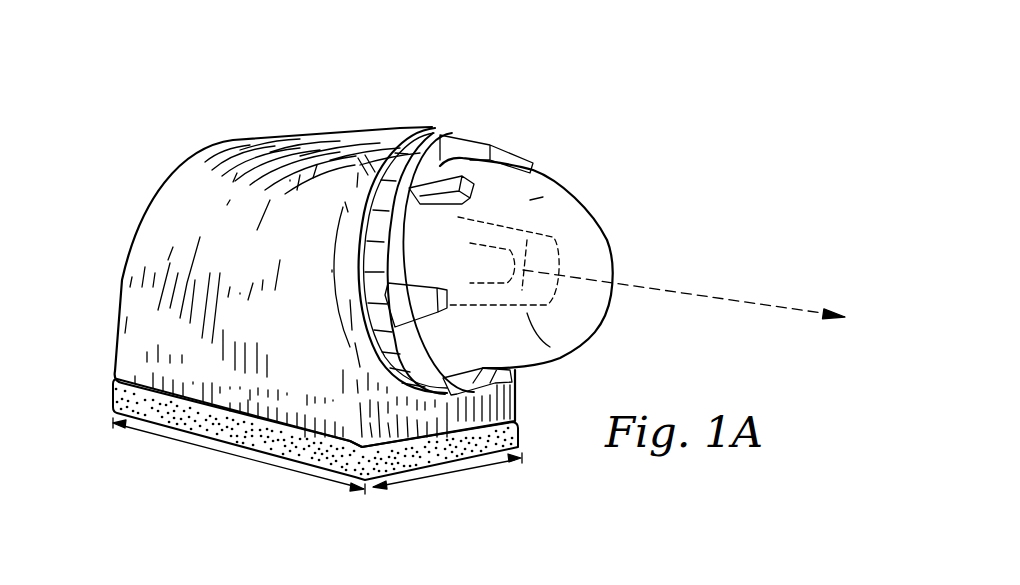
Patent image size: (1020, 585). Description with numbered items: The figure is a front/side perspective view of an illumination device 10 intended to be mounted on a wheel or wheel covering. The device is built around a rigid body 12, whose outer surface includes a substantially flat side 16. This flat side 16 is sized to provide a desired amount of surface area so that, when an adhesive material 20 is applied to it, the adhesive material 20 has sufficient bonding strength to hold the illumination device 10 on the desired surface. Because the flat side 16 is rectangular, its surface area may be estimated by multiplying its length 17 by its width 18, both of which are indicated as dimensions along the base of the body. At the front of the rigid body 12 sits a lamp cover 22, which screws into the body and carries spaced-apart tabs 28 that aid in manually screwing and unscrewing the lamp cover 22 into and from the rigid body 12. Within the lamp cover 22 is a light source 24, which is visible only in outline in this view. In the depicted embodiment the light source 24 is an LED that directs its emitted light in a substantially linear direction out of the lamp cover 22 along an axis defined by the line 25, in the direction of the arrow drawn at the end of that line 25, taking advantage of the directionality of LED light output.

The illumination device 10 is at (131, 159).
The rigid body 12 is at (137, 238).
The flat side 16 is at (328, 492).
The length 17 is at (187, 445).
The width 18 is at (433, 478).
The adhesive material 20 is at (124, 403).
The lamp cover 22 is at (558, 250).
The light source 24 is at (607, 233).
The line 25 is at (723, 300).
The tabs 28 is at (440, 173).